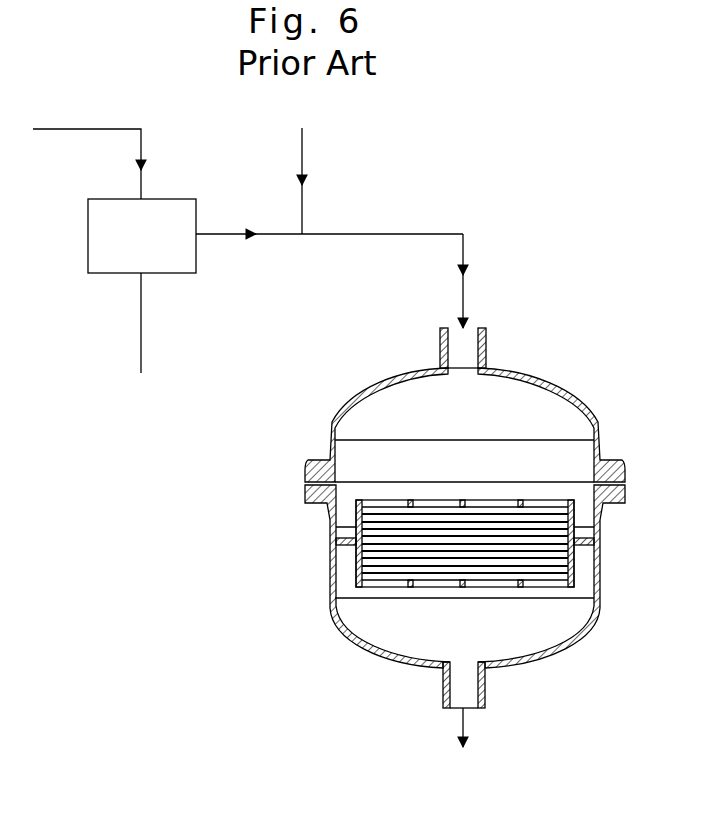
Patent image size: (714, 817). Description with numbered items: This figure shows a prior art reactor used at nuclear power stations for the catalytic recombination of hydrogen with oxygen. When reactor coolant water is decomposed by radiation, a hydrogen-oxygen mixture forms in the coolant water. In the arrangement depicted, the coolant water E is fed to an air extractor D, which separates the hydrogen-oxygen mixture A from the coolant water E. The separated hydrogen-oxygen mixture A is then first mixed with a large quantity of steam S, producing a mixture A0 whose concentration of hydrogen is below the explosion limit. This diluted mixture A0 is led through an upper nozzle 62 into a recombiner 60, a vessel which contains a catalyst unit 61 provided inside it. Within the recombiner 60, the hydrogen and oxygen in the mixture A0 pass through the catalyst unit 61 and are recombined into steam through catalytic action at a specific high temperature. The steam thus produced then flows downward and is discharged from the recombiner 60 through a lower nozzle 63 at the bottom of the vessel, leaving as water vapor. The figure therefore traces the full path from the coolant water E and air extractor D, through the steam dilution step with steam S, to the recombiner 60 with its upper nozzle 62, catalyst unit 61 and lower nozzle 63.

The coolant water E is at (144, 165).
The air extractor D is at (178, 199).
The hydrogen-oxygen mixture A is at (250, 232).
The steam S is at (306, 181).
The mixture A0 is at (467, 271).
The recombiner 60 is at (570, 386).
The catalyst unit 61 is at (543, 567).
The upper nozzle 62 is at (466, 336).
The lower nozzle 63 is at (467, 689).